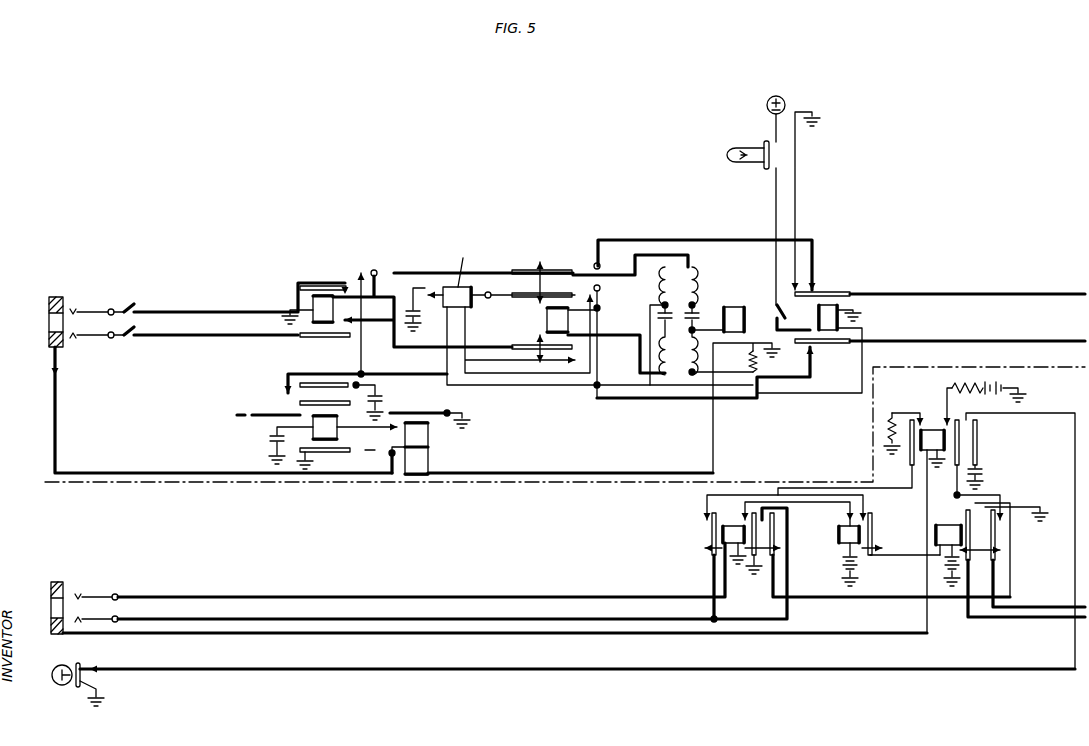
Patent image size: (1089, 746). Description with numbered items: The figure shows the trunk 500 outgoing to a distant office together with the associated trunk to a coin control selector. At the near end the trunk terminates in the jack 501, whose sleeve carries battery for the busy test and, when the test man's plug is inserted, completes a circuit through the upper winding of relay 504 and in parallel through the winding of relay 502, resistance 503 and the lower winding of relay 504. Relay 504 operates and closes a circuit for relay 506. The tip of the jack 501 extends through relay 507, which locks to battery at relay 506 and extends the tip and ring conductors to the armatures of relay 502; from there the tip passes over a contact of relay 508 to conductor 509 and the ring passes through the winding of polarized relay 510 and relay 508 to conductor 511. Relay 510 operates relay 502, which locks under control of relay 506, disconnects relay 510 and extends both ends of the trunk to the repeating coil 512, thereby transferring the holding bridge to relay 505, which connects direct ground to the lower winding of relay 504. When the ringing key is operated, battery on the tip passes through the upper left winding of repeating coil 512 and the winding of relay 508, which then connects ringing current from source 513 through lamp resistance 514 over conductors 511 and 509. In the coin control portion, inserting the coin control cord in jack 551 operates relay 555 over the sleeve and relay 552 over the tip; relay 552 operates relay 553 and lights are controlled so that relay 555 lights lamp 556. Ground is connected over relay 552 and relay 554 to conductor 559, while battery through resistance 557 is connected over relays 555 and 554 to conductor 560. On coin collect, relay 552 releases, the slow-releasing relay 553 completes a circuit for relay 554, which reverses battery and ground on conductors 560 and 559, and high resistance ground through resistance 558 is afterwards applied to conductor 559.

The trunk 500 is at (689, 304).
The jack 501 is at (68, 305).
The relay 502 is at (560, 333).
The resistance 503 is at (763, 357).
The relay 504 is at (420, 460).
The relay 505 is at (736, 307).
The relay 506 is at (325, 440).
The relay 507 is at (322, 295).
The relay 508 is at (836, 306).
The conductor 509 is at (1000, 296).
The polarized relay 510 is at (466, 305).
The conductor 511 is at (995, 343).
The repeating coil 512 is at (677, 265).
The source 513 is at (782, 97).
The lamp resistance 514 is at (723, 160).
The jack 551 is at (72, 593).
The relay 552 is at (722, 535).
The relay 553 is at (838, 535).
The relay 554 is at (935, 535).
The relay 555 is at (925, 447).
The lamp 556 is at (63, 666).
The resistance 557 is at (950, 390).
The resistance 558 is at (888, 432).
The conductor 559 is at (1028, 624).
The conductor 560 is at (1026, 609).